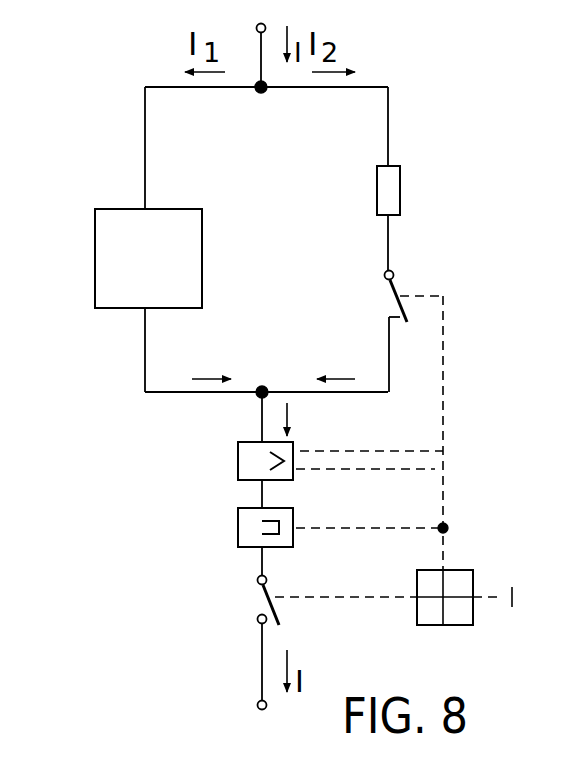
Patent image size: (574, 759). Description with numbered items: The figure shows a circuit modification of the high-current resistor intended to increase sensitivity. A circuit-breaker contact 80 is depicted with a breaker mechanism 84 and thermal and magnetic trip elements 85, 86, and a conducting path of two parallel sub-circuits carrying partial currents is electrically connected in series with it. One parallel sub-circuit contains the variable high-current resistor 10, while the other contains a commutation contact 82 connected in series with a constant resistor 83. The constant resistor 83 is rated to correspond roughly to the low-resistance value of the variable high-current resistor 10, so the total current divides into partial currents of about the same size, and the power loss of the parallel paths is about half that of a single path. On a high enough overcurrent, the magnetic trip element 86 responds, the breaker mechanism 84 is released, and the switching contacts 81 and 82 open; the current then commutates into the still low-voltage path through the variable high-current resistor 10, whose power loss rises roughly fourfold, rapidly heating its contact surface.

The variable high-current resistor 10 is at (102, 271).
The circuit-breaker contact 80 is at (210, 418).
The switching contact 81 is at (262, 597).
The commutation contact 82 is at (396, 302).
The constant resistor 83 is at (393, 193).
The breaker mechanism 84 is at (466, 578).
The thermal trip element 85 is at (245, 527).
The magnetic trip element 86 is at (245, 462).